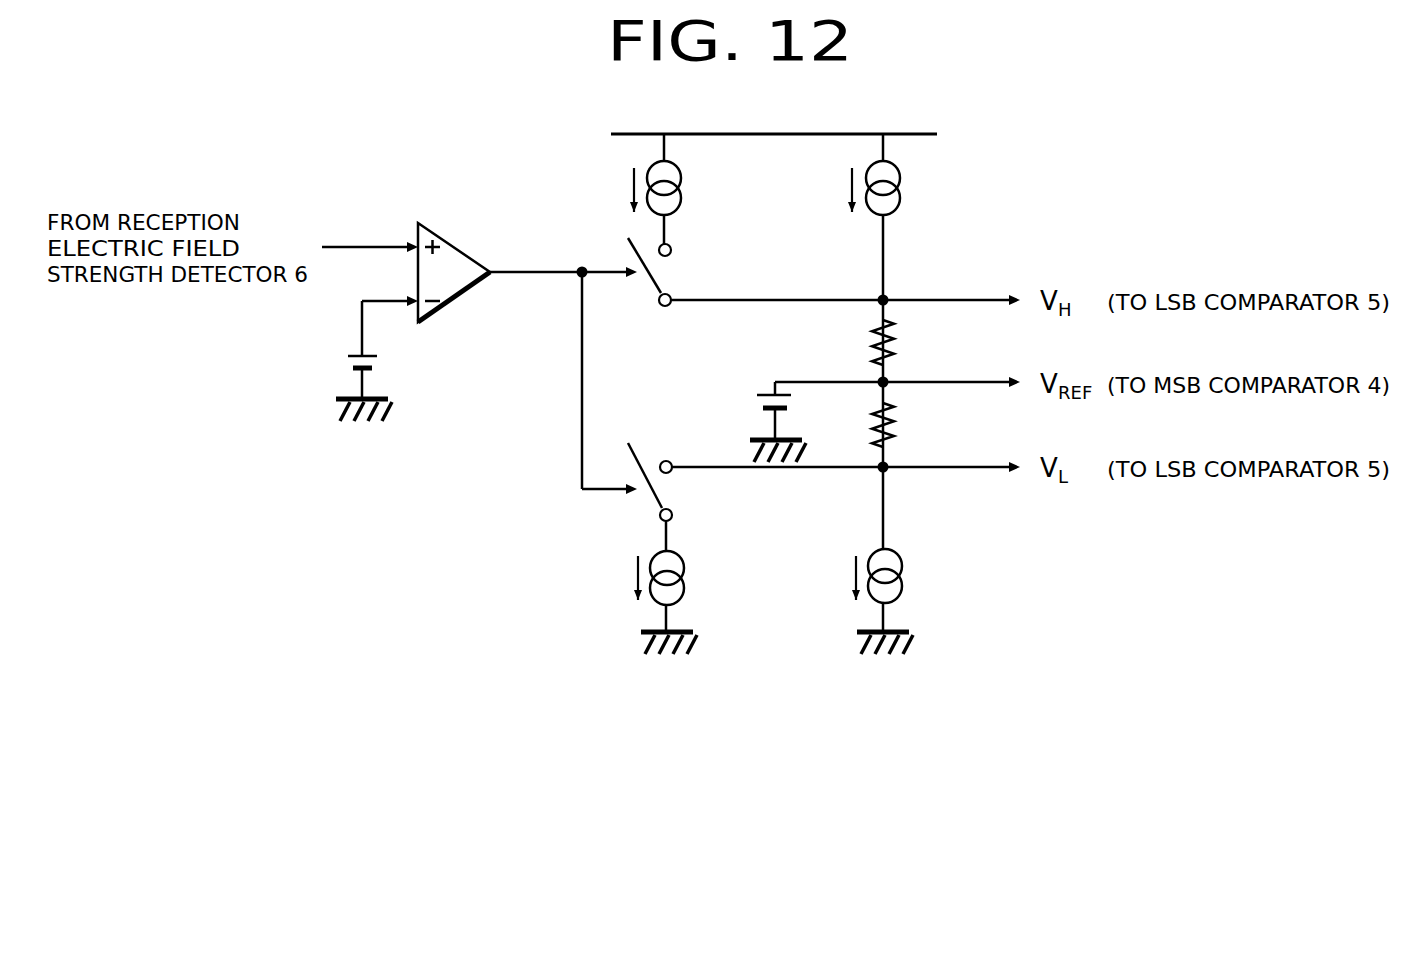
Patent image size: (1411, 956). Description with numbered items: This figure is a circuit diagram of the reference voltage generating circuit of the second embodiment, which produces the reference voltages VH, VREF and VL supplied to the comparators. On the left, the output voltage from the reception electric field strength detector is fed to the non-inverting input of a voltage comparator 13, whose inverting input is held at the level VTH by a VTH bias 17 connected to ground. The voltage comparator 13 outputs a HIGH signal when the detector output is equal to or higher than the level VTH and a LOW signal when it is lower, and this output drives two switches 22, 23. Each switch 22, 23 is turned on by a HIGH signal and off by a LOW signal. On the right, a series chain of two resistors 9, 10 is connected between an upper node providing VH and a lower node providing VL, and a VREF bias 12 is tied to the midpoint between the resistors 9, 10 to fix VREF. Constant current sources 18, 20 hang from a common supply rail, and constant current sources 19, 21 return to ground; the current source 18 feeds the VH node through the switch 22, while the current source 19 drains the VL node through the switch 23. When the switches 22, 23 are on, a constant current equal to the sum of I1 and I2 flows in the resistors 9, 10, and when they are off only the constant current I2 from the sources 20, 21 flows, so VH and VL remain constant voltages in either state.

The resistor 9 is at (895, 345).
The resistor 10 is at (895, 430).
The VREF bias 12 is at (760, 422).
The voltage comparator 13 is at (452, 258).
The VTH bias 17 is at (360, 393).
The constant current source 18 is at (686, 184).
The constant current source 19 is at (688, 572).
The constant current source 20 is at (905, 184).
The constant current source 21 is at (905, 572).
The switch 22 is at (670, 274).
The switch 23 is at (670, 486).